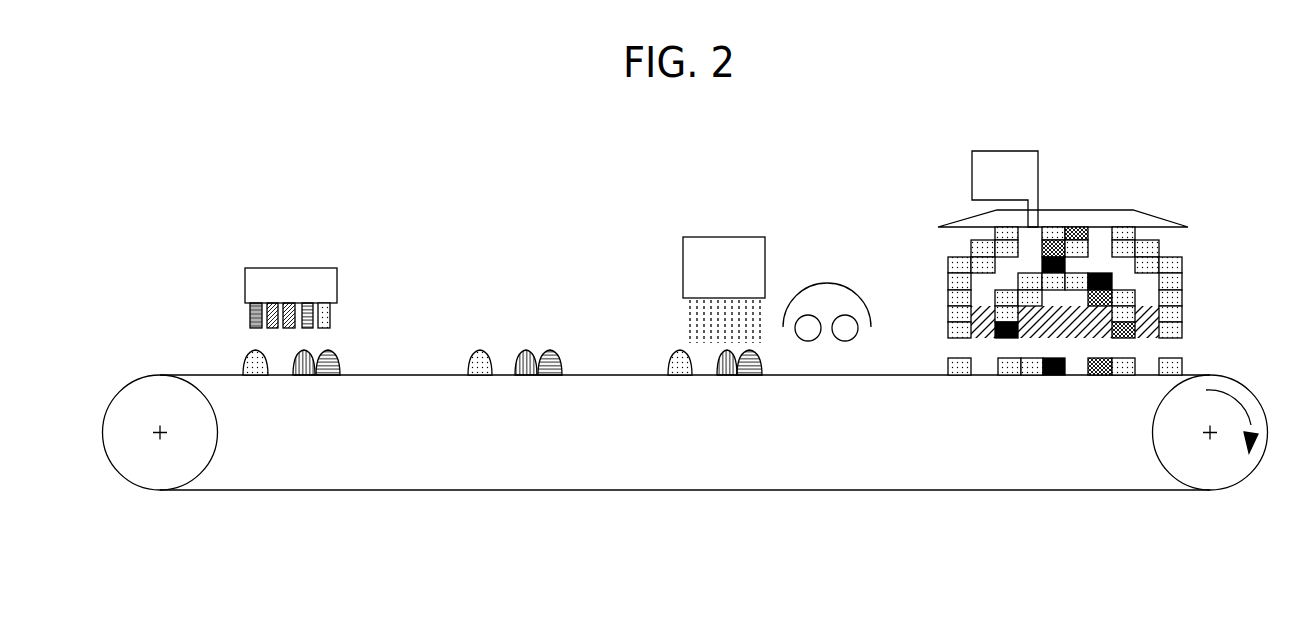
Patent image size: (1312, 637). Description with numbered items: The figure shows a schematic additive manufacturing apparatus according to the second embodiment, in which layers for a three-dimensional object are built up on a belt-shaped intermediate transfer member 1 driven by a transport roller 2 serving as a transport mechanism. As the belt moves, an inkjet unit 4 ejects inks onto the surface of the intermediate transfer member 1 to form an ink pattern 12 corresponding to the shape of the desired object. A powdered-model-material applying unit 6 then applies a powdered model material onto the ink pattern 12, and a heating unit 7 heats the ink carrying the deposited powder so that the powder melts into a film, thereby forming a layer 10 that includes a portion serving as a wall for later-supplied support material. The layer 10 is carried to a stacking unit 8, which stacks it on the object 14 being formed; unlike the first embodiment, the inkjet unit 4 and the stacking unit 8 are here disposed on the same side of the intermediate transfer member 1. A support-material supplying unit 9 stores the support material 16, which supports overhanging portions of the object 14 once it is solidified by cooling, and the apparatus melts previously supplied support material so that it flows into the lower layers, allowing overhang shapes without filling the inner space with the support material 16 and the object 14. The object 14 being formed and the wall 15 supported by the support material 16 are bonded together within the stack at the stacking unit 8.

The intermediate transfer member 1 is at (607, 377).
The transport roller 2 is at (203, 435).
The inkjet unit 4 is at (313, 272).
The powdered-model-material applying unit 6 is at (740, 240).
The heating unit 7 is at (838, 287).
The stacking unit 8 is at (1095, 247).
The support-material supplying unit 9 is at (985, 178).
The layer 10 is at (960, 373).
The ink pattern 12 is at (481, 350).
The object 14 is at (1123, 297).
The wall 15 is at (1175, 295).
The support material 16 is at (1092, 330).